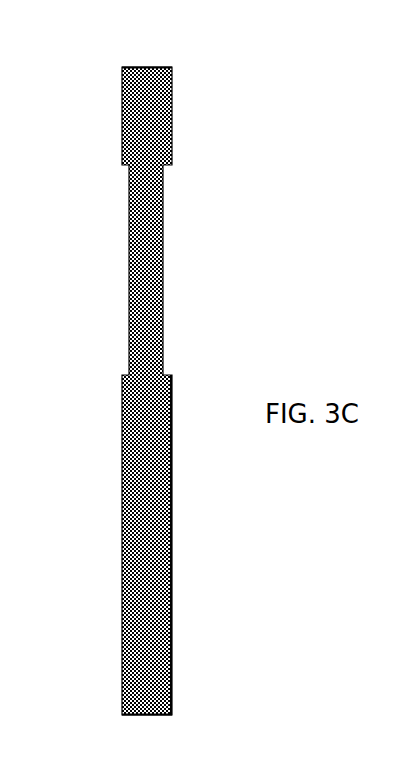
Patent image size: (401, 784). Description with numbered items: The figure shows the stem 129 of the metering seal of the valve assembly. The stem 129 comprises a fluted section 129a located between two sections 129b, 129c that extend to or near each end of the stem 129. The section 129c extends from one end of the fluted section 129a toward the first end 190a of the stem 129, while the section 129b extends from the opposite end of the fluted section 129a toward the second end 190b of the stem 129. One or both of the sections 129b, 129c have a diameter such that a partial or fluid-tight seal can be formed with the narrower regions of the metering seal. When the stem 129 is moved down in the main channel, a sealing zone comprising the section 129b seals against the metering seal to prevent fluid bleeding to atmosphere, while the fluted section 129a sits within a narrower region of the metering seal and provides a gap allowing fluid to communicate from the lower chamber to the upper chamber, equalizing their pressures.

The stem 129 is at (157, 92).
The fluted section 129a is at (164, 218).
The section 129b is at (137, 142).
The section 129c is at (123, 428).
The first end 190a is at (140, 693).
The second end 190b is at (137, 73).